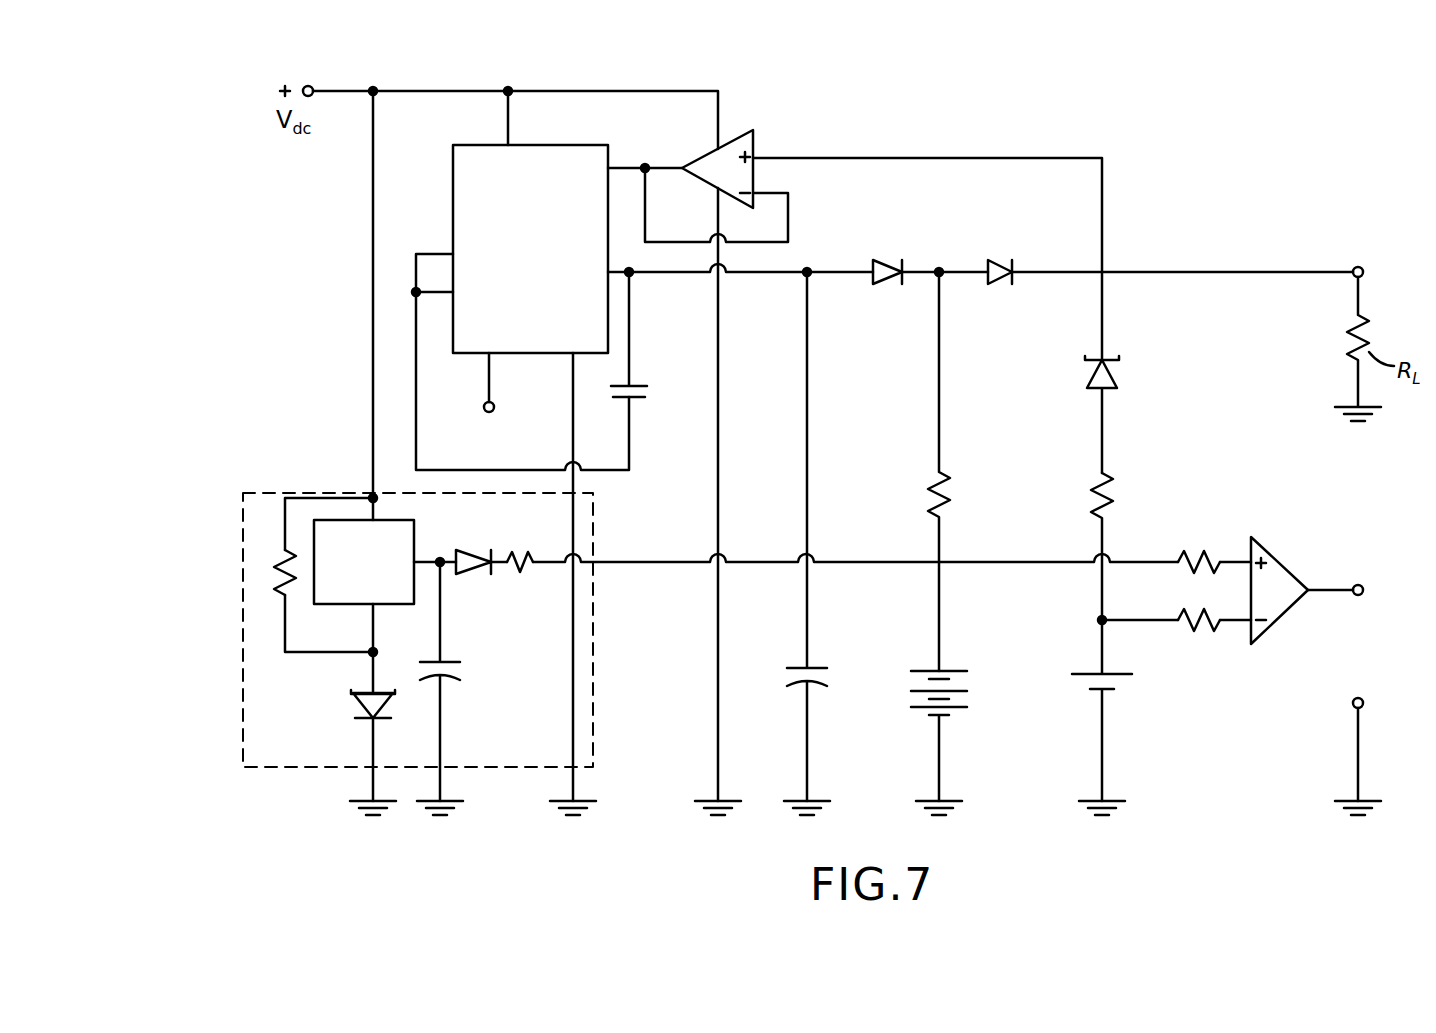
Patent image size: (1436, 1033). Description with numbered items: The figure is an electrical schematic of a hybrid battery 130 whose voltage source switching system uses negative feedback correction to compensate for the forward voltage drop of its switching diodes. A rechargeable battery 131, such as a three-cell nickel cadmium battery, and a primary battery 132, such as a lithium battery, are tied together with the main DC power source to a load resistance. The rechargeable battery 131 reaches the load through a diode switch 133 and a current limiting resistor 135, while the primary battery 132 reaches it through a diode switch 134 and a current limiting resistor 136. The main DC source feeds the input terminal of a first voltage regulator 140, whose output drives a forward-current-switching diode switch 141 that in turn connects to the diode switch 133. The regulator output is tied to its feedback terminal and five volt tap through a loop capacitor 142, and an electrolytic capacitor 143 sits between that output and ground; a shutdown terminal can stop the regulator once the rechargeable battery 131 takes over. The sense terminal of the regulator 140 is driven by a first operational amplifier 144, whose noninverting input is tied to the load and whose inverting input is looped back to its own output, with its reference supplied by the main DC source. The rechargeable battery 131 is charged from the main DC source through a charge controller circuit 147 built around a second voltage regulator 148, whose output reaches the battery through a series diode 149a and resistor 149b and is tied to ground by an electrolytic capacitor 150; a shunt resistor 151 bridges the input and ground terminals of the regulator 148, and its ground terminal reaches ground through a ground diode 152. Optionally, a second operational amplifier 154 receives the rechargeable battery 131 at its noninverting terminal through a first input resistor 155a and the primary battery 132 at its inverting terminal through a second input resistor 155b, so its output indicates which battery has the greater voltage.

The hybrid battery 130 is at (1243, 113).
The rechargeable battery 131 is at (960, 708).
The primary battery 132 is at (1108, 690).
The diode switch 133 is at (996, 263).
The diode switch 134 is at (1118, 373).
The current limiting resistor 135 is at (947, 483).
The current limiting resistor 136 is at (1113, 500).
The first voltage regulator 140 is at (453, 196).
The forward-current-switching diode switch 141 is at (889, 263).
The loop capacitor 142 is at (637, 400).
The electrolytic capacitor 143 is at (820, 667).
The first operational amplifier 144 is at (760, 132).
The charge controller circuit 147 is at (596, 525).
The second voltage regulator 148 is at (418, 527).
The diode 149a is at (463, 578).
The resistor 149b is at (527, 578).
The electrolytic capacitor 150 is at (460, 679).
The resistor 151 is at (278, 588).
The ground diode 152 is at (356, 705).
The second operational amplifier 154 is at (1289, 563).
The first input resistor 155a is at (1195, 546).
The second input resistor 155b is at (1196, 636).